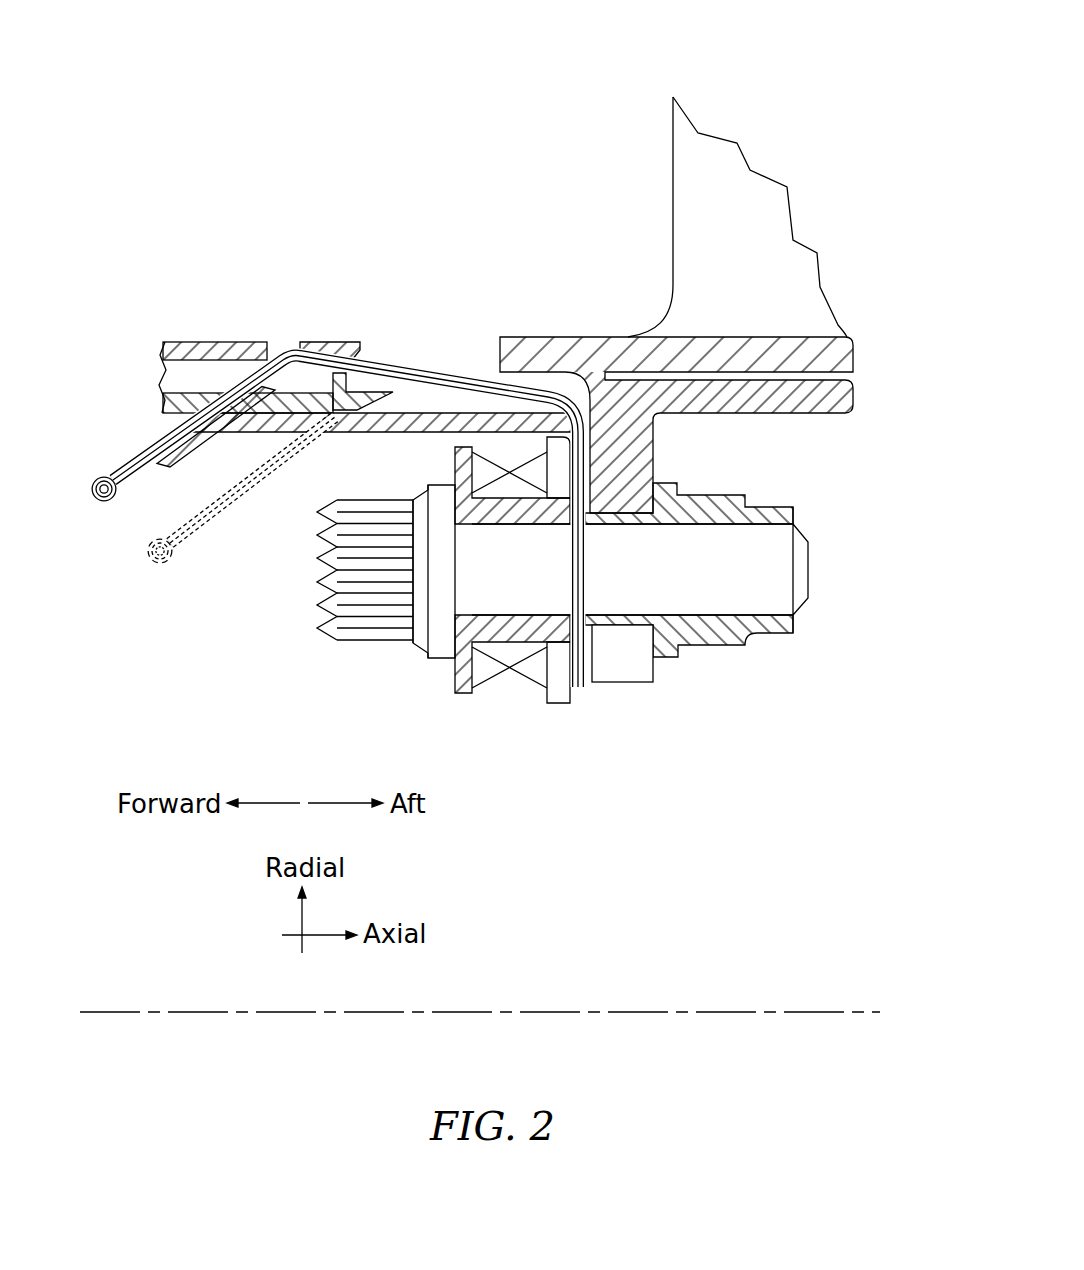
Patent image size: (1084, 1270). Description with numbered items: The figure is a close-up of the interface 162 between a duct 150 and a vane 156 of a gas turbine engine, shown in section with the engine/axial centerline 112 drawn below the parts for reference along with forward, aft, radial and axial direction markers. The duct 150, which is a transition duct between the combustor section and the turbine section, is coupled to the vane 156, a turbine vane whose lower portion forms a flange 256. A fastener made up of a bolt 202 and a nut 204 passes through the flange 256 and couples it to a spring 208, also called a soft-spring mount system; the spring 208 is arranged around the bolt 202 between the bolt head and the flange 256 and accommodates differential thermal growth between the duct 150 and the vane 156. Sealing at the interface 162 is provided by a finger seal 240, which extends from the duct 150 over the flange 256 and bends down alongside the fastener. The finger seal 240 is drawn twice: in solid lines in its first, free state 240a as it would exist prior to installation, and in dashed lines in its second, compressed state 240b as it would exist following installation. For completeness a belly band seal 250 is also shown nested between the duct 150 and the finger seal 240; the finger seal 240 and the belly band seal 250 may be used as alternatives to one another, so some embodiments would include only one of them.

The engine/axial centerline 112 is at (878, 1000).
The duct 150 is at (183, 340).
The vane 156 is at (782, 263).
The interface 162 is at (541, 256).
The bolt 202 is at (460, 603).
The nut 204 is at (713, 642).
The spring 208 is at (527, 677).
The finger seal 240 is at (337, 472).
The first/free state of the finger seal 240a is at (410, 371).
The second/compressed state of the finger seal 240b is at (223, 512).
The belly band seal 250 is at (272, 345).
The flange 256 is at (647, 443).